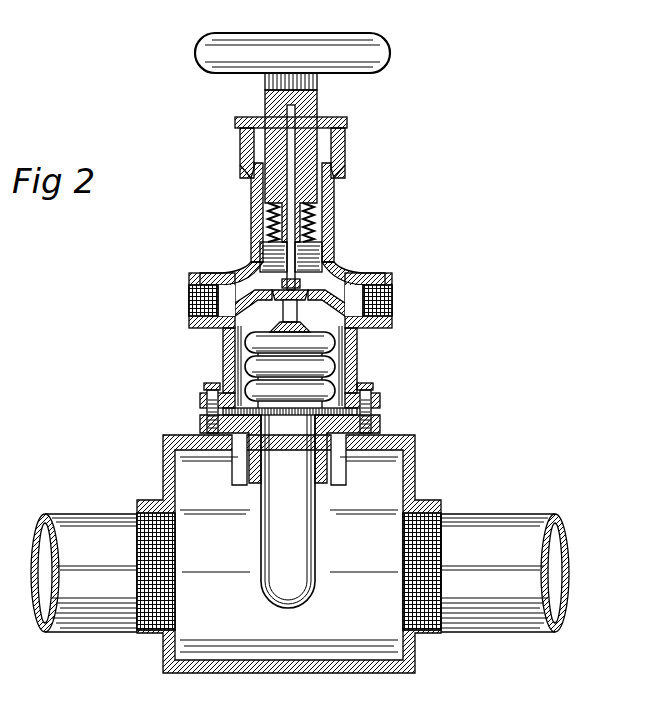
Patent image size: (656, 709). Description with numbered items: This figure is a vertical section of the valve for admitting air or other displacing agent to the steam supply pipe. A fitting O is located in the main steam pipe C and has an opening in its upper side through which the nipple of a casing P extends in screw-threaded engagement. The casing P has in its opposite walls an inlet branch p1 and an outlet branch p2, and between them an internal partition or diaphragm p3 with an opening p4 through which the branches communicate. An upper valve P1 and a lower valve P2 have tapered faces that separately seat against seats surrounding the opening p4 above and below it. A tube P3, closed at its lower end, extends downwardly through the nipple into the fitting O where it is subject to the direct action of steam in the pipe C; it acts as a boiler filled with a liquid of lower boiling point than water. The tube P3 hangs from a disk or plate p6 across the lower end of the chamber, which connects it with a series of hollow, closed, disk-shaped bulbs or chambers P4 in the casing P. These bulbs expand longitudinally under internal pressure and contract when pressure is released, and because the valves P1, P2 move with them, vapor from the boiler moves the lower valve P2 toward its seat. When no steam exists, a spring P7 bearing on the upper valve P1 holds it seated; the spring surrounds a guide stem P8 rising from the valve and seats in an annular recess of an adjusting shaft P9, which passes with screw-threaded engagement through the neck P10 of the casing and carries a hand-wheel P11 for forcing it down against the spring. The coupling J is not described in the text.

The hand-wheel P11 is at (391, 52).
The adjusting shaft P9 is at (318, 104).
The neck P10 is at (328, 193).
The guide stem P8 is at (288, 193).
The spring P7 is at (332, 266).
The partition or diaphragm p3 is at (356, 279).
The upper valve P1 is at (273, 292).
The inlet branch p1 is at (192, 320).
The outlet branch p2 is at (392, 299).
The lower valve P2 is at (300, 331).
The casing P is at (352, 352).
The opening p4 is at (275, 303).
The hollow, closed, disk-shaped bulbs or chambers P4 is at (260, 367).
The disk or plate p6 is at (358, 385).
The coupling nut J is at (374, 421).
The fitting O is at (416, 453).
The main steam pipe C is at (80, 512).
The tube P3 is at (310, 543).